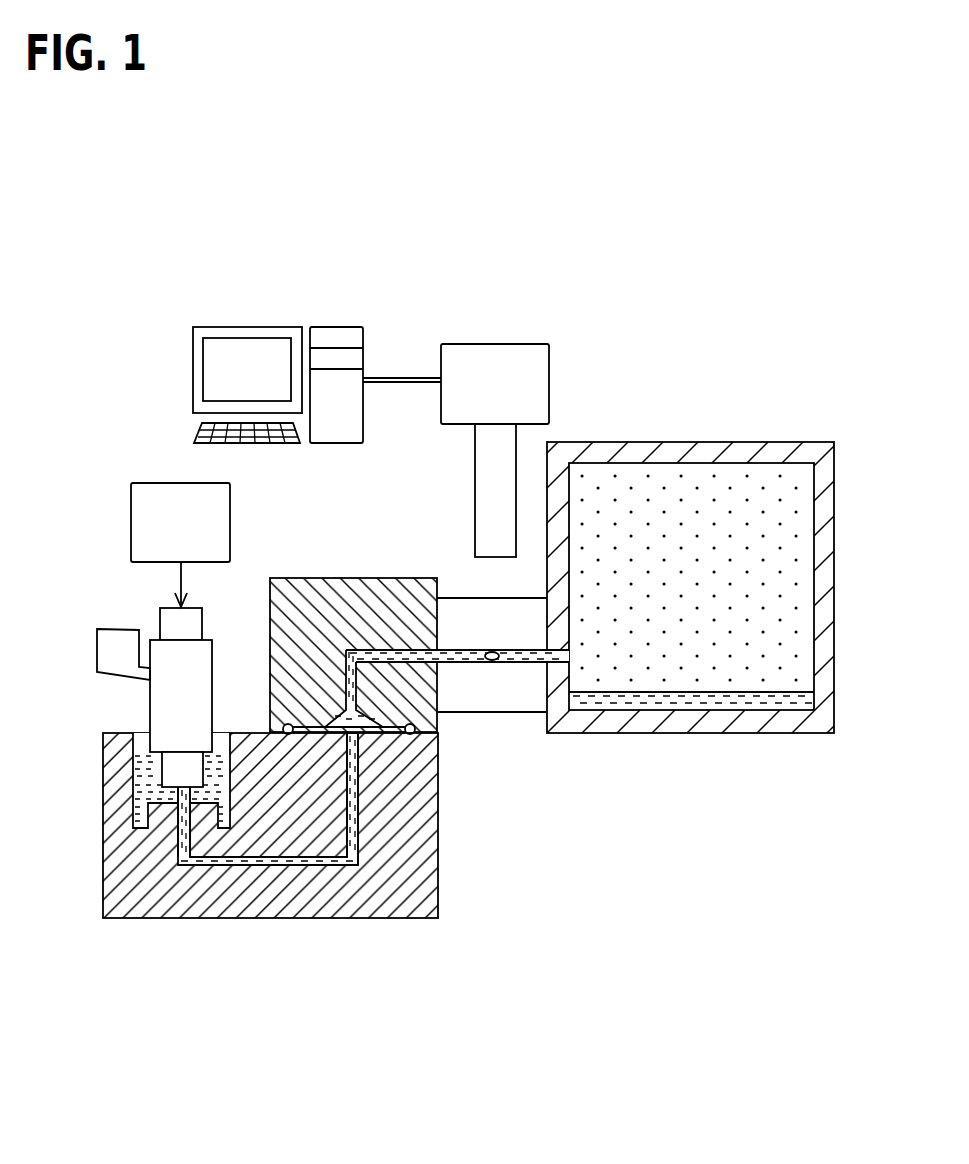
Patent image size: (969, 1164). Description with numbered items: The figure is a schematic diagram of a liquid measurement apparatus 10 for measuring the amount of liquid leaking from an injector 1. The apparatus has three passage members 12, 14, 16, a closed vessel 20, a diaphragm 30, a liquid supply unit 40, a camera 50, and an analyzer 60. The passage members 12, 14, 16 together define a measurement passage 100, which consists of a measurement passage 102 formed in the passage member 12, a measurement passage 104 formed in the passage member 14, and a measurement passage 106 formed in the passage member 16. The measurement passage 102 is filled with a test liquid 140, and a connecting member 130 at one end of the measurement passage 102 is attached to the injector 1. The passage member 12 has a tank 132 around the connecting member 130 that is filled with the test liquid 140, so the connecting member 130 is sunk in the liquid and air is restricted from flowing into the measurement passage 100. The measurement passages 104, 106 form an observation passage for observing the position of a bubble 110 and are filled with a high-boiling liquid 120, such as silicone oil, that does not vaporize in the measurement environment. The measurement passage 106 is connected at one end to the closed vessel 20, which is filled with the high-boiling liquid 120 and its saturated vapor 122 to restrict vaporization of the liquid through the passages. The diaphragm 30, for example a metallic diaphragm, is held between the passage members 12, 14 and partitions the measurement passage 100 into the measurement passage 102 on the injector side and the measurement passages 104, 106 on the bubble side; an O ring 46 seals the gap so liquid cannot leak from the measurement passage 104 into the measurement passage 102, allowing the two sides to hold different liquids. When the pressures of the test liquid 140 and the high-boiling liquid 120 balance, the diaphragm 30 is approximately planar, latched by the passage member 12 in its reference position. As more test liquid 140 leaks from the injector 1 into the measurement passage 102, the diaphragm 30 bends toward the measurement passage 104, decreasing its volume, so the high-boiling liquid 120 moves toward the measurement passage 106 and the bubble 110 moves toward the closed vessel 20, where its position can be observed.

The injector 1 is at (152, 705).
The liquid measurement apparatus 10 is at (789, 905).
The passage member 12 is at (440, 900).
The passage member 14 is at (300, 578).
The passage member 16 is at (480, 712).
The closed vessel 20 is at (720, 442).
The diaphragm 30 is at (385, 737).
The liquid supply unit 40 is at (131, 520).
The O ring 46 is at (412, 735).
The camera 50 is at (512, 344).
The analyzer 60 is at (228, 327).
The measurement passage 100 is at (235, 865).
The measurement passage 102 is at (307, 865).
The measurement passage 104 is at (354, 650).
The measurement passage 106 is at (468, 650).
The bubble 110 is at (499, 661).
The high-boiling liquid 120 is at (408, 650).
The saturated vapor 122 is at (803, 607).
The connecting member 130 is at (135, 795).
The tank 132 is at (133, 822).
The test liquid 140 is at (190, 865).